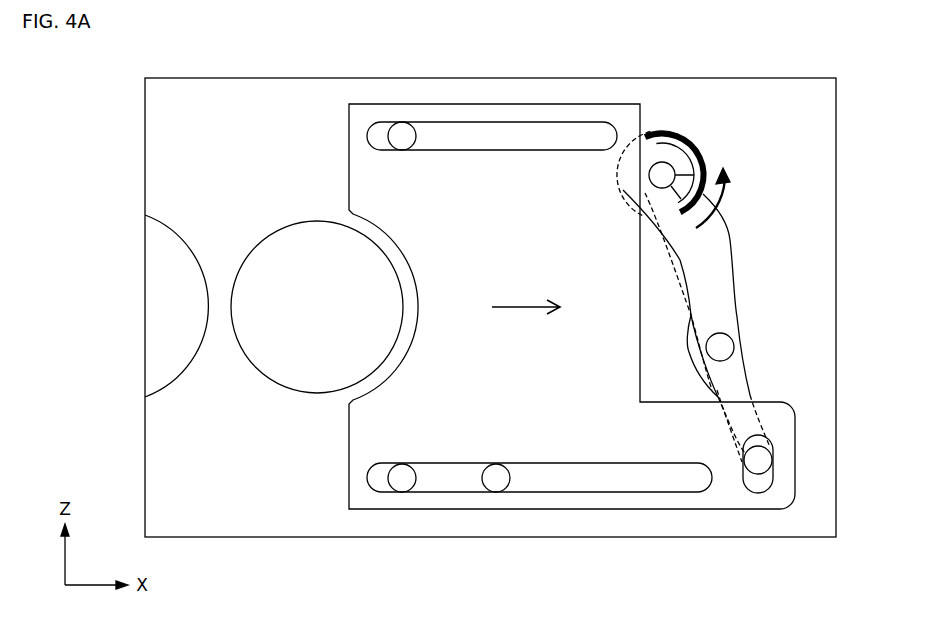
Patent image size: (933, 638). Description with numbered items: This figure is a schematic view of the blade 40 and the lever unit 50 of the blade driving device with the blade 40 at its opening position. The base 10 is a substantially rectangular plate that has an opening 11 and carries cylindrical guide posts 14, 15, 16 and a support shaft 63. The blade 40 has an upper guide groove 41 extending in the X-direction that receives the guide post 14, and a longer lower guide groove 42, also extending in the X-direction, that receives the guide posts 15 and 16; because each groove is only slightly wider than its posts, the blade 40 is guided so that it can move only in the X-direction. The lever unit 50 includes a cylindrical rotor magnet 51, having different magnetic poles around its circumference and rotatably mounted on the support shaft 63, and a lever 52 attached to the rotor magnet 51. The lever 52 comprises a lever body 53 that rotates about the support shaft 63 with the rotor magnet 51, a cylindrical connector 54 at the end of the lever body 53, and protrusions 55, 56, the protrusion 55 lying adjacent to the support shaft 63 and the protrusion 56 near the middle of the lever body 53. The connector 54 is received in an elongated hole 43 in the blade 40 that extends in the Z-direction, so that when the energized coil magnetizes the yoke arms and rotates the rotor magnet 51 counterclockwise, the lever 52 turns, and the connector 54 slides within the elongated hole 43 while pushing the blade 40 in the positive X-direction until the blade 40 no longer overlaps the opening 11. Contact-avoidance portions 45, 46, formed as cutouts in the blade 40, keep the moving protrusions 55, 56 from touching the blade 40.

The base 10 is at (512, 78).
The opening 11 is at (304, 319).
The guide post 14 is at (398, 128).
The guide post 15 is at (495, 485).
The guide post 16 is at (398, 485).
The blade 40 is at (450, 104).
The guide groove 41 is at (577, 126).
The guide groove 42 is at (553, 484).
The elongated hole 43 is at (757, 485).
The contact-avoidance portion 45 is at (653, 172).
The contact-avoidance portion 46 is at (705, 376).
The lever unit 50 is at (756, 239).
The rotor magnet 51 is at (668, 140).
The lever 52 is at (742, 211).
The lever body 53 is at (735, 296).
The connector 54 is at (760, 460).
The protrusion 55 is at (707, 153).
The protrusion 56 is at (722, 346).
The support shaft 63 is at (667, 172).